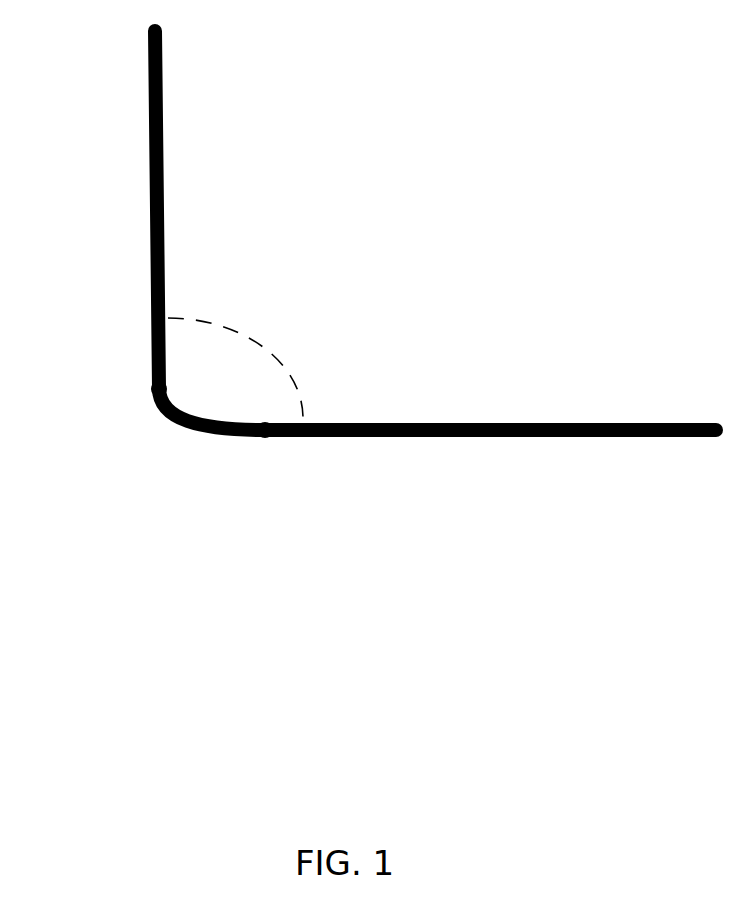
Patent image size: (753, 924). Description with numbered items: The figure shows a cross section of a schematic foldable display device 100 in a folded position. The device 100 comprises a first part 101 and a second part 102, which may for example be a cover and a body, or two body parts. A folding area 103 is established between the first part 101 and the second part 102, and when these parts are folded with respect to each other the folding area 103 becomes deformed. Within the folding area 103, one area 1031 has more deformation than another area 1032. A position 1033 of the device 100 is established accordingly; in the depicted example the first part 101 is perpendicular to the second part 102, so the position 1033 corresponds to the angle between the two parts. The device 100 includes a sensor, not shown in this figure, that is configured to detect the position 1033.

The foldable display device 100 is at (549, 161).
The first part 101 is at (150, 178).
The second part 102 is at (572, 437).
The folding area 103 is at (165, 485).
The area having more deformation 1031 is at (157, 403).
The another area 1032 is at (263, 433).
The position 1033 is at (248, 337).